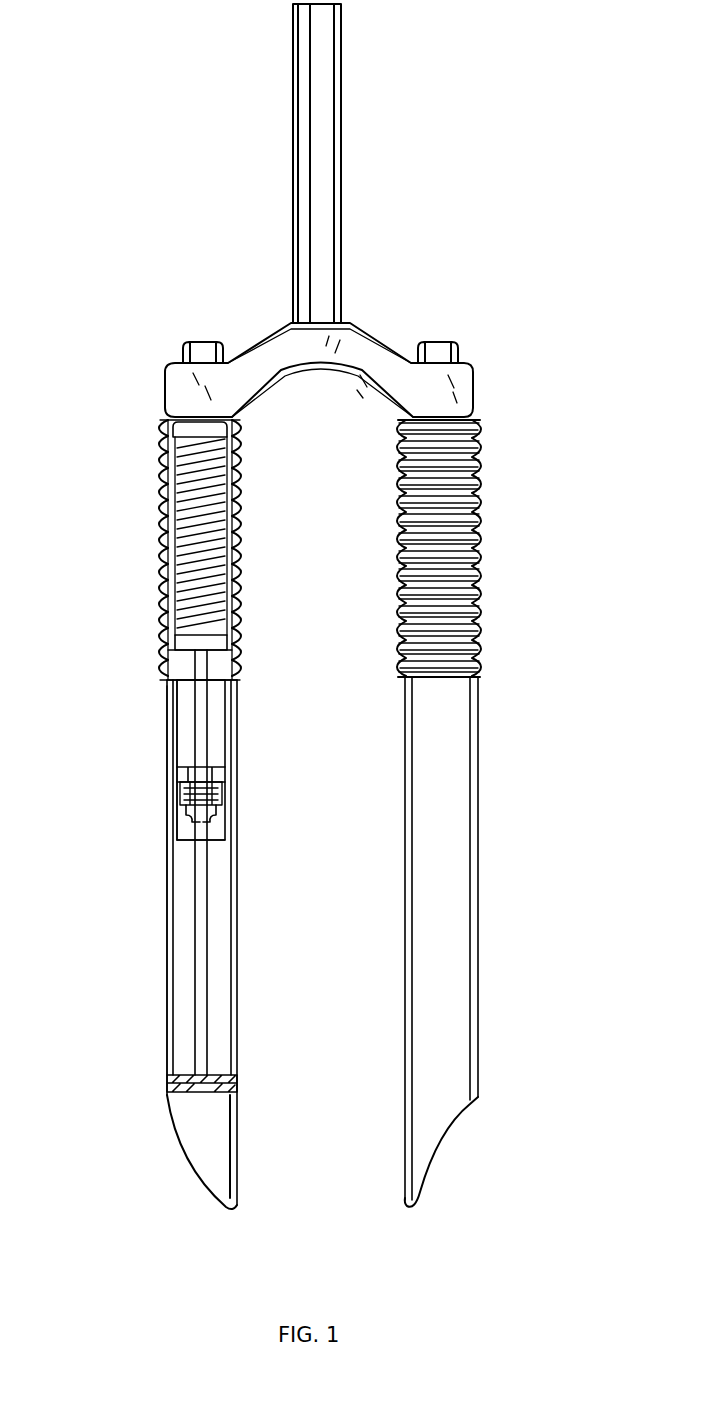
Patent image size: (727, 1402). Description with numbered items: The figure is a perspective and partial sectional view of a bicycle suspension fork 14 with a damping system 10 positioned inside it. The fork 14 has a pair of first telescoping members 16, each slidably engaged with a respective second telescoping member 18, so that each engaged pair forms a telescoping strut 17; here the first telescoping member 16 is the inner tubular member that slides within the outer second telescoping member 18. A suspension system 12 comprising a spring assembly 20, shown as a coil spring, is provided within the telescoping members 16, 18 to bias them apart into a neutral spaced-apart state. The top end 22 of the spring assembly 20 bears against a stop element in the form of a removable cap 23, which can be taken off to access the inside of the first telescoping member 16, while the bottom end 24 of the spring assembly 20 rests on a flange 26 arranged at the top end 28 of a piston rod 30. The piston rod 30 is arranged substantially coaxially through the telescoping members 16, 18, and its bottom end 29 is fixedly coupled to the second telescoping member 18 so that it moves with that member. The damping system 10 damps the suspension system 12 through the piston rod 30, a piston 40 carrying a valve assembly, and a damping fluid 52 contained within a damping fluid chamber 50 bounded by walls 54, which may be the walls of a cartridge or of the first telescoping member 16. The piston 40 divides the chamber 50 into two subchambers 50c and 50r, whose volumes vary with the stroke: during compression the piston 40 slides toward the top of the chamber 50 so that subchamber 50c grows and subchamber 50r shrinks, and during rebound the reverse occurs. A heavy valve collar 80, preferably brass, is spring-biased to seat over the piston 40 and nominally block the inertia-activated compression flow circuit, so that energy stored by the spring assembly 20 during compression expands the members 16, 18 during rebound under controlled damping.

The damping system 10 is at (152, 741).
The suspension system 12 is at (161, 510).
The bicycle suspension fork 14 is at (529, 291).
The first telescoping member 16 is at (240, 458).
The telescoping strut 17 is at (478, 513).
The second telescoping member 18 is at (237, 1002).
The spring assembly 20 is at (228, 517).
The top end of spring assembly 22 is at (190, 438).
The cap 23 is at (188, 352).
The bottom end of spring assembly 24 is at (238, 633).
The flange 26 is at (175, 643).
The top end of piston rod 28 is at (235, 670).
The bottom end of piston rod 29 is at (183, 1068).
The piston rod 30 is at (208, 717).
The piston 40 is at (218, 771).
The damping fluid chamber 50 is at (188, 768).
The rebound subchamber 50r is at (188, 696).
The compression subchamber 50c is at (190, 822).
The damping fluid 52 is at (220, 692).
The walls of damping fluid chamber 54 is at (186, 838).
The valve collar 80 is at (183, 796).